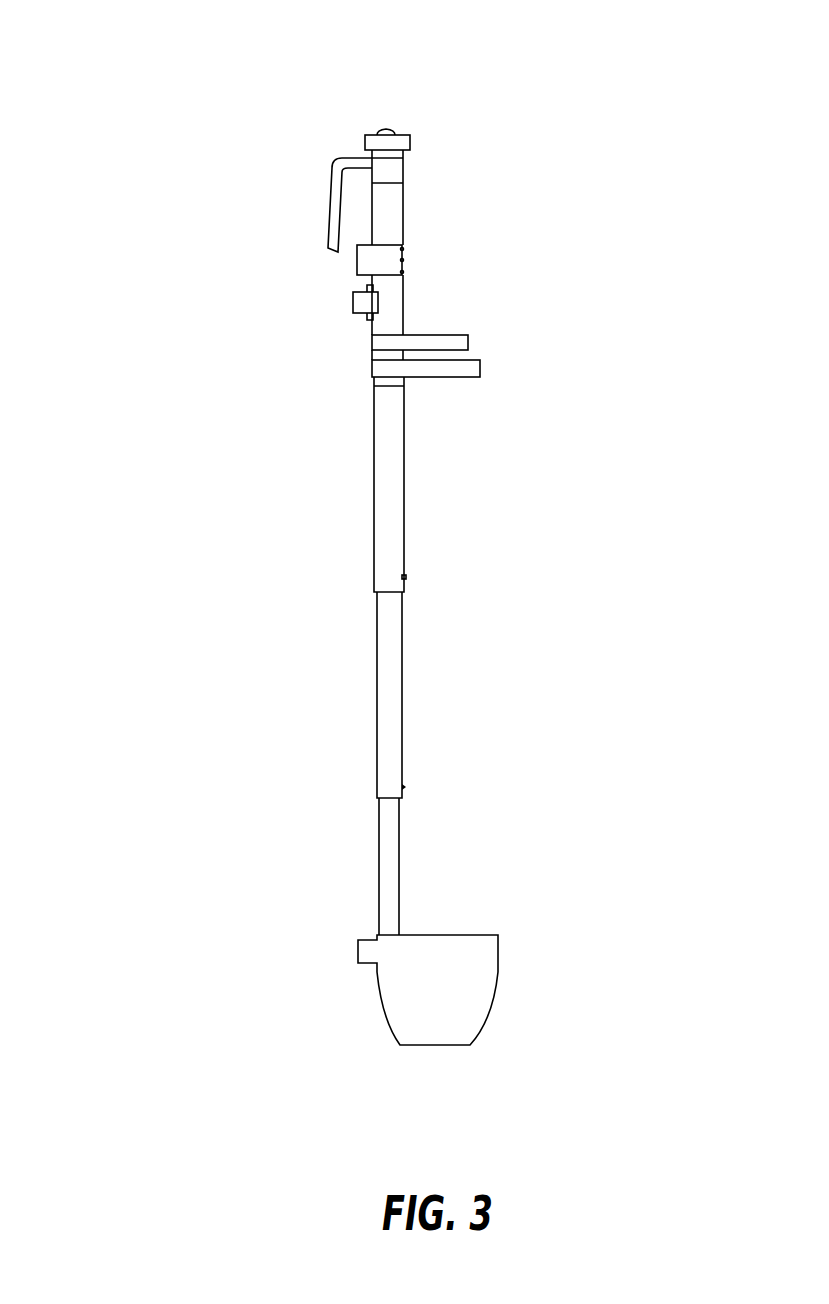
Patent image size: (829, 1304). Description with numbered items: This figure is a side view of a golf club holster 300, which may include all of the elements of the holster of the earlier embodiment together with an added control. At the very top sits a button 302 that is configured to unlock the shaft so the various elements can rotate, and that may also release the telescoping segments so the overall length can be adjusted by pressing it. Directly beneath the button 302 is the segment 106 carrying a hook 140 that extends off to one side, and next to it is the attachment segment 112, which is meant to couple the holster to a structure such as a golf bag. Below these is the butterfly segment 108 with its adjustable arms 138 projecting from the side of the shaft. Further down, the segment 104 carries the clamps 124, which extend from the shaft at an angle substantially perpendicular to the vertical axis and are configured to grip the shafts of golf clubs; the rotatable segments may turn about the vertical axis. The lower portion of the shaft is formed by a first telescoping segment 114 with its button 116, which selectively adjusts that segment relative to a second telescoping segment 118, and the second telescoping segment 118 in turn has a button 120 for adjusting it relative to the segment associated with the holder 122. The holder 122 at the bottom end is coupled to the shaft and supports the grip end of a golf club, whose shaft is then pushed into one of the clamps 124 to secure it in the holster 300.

The golf club holster 300 is at (104, 41).
The button 302 is at (378, 130).
The segment 106 is at (403, 178).
The attachment segment 112 is at (403, 215).
The hook 140 is at (332, 180).
The butterfly segment 108 is at (403, 302).
The adjustable arms 138 is at (352, 303).
The clamp 124 is at (468, 335).
The segment 104 is at (373, 351).
The first telescoping segment 114 is at (375, 478).
The button 116 is at (405, 577).
The second telescoping segment 118 is at (377, 692).
The button 120 is at (402, 787).
The holder 122 is at (488, 980).